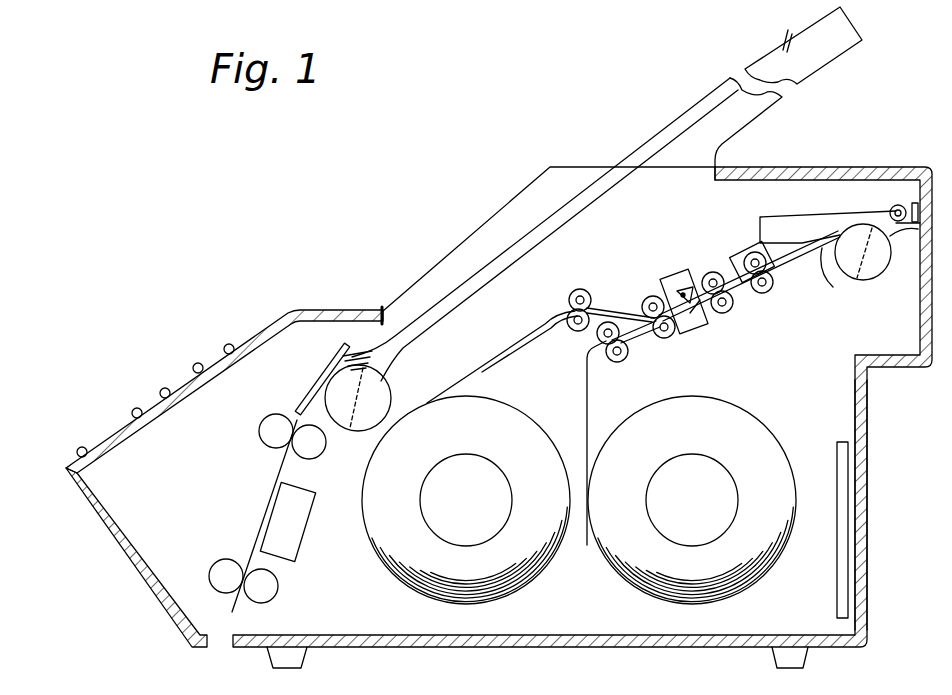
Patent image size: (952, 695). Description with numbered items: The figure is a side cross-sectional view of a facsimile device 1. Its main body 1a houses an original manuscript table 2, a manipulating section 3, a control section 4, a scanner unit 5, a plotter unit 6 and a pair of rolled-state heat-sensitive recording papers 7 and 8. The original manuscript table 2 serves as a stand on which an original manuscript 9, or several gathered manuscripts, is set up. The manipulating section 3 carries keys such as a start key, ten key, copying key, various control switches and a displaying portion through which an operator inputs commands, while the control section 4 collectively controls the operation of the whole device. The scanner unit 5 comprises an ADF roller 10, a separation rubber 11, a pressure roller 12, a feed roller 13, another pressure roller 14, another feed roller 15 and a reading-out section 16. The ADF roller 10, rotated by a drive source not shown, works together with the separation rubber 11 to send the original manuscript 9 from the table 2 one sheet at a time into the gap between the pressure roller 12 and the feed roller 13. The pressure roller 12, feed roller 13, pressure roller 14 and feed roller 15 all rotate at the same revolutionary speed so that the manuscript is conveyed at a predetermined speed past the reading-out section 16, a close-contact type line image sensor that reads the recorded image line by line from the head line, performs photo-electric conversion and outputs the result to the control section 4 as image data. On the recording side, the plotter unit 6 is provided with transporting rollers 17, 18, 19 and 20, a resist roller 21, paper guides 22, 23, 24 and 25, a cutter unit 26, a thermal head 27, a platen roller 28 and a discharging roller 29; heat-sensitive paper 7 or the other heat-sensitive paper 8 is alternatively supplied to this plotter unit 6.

The facsimile device 1 is at (472, 172).
The main body 1a is at (868, 395).
The original manuscript table 2 is at (851, 42).
The manipulating section 3 is at (188, 380).
The control section 4 is at (840, 442).
The scanner unit 5 is at (230, 499).
The plotter unit 6 is at (688, 243).
The heat-sensitive recording paper 7 is at (765, 574).
The heat-sensitive recording paper 8 is at (543, 582).
The original manuscript 9 is at (678, 114).
The ADF roller 10 is at (390, 376).
The separation rubber 11 is at (324, 364).
The pressure roller 12 is at (258, 427).
The feed roller 13 is at (327, 445).
The pressure roller 14 is at (212, 568).
The feed roller 15 is at (280, 590).
The reading-out section 16 is at (276, 535).
The transporting roller 17 is at (628, 358).
The transporting roller 18 is at (576, 331).
The transporting roller 19 is at (674, 338).
The transporting roller 20 is at (725, 313).
The resist roller 21 is at (775, 284).
The paper guide 22 is at (605, 351).
The paper guide 23 is at (536, 337).
The paper guide 24 is at (747, 291).
The paper guide 25 is at (840, 272).
The cutter unit 26 is at (662, 280).
The thermal head 27 is at (815, 211).
The platen roller 28 is at (878, 276).
The discharging roller 29 is at (891, 207).